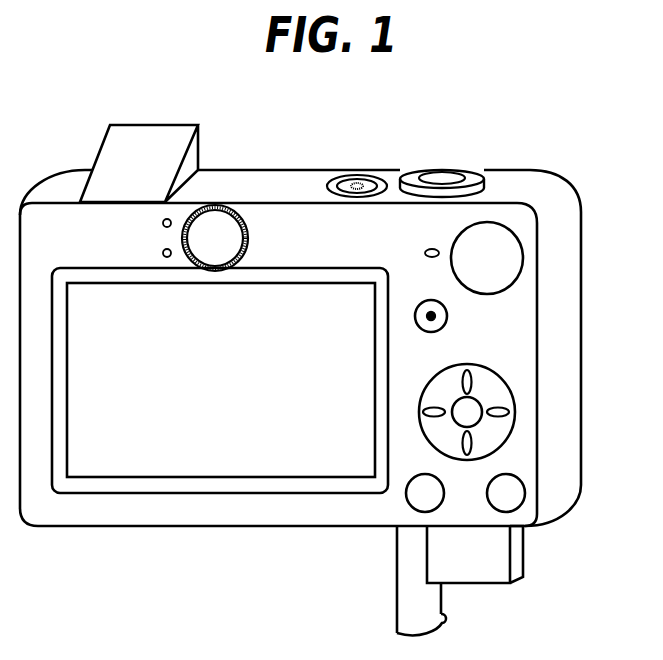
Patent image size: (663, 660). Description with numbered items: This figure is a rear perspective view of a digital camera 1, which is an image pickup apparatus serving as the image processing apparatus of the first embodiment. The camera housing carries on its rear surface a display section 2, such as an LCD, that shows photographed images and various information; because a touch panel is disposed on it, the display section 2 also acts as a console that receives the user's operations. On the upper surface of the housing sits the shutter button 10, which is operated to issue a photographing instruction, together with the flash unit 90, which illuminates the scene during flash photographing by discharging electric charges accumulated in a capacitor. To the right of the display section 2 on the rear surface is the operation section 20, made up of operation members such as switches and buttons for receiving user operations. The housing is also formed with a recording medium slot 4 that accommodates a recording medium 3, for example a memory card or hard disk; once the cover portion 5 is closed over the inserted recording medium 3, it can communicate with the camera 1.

The camera 1 is at (134, 551).
The display section 2 is at (213, 457).
The recording medium 3 is at (475, 550).
The recording medium slot 4 is at (455, 527).
The cover portion 5 is at (427, 623).
The shutter button 10 is at (444, 171).
The operation section 20 is at (453, 197).
The flash unit 90 is at (167, 143).